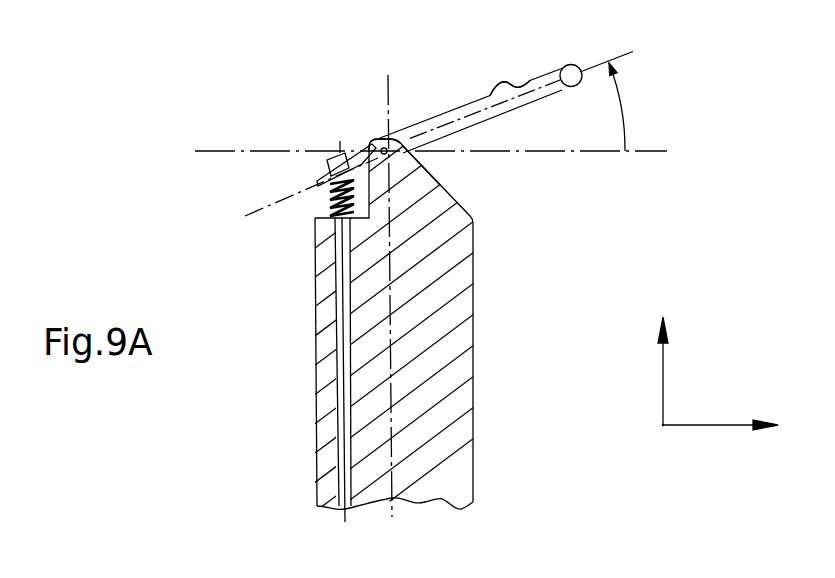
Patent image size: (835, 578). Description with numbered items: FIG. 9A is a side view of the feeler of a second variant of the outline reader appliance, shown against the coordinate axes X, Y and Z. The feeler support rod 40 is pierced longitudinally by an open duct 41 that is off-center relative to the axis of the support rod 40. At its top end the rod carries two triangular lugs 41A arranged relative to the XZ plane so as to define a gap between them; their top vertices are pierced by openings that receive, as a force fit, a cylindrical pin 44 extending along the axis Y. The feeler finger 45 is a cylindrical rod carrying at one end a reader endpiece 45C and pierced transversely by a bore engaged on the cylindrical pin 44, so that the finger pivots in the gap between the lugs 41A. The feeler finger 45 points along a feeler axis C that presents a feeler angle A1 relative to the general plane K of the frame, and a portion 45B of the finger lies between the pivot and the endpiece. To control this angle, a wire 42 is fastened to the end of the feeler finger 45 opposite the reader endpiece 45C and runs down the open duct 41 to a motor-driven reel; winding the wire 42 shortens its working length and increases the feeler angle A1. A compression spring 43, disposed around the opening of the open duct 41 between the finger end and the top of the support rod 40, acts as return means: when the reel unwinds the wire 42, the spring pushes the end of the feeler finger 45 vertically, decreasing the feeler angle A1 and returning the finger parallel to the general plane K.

The feeler support rod 40 is at (460, 376).
The open duct 41 is at (338, 438).
The lugs 41A is at (436, 188).
The wire 42 is at (349, 347).
The compression spring 43 is at (325, 207).
The cylindrical pin 44 is at (372, 148).
The feeler finger 45 is at (443, 106).
The arm portion 45B is at (492, 92).
The reader endpiece 45C is at (563, 66).
The feeler axis C is at (621, 58).
The general plane of the frame K is at (648, 152).
The feeler angle A1 is at (638, 107).
The axis X is at (732, 428).
The axis Y is at (648, 429).
The axis Z is at (661, 353).